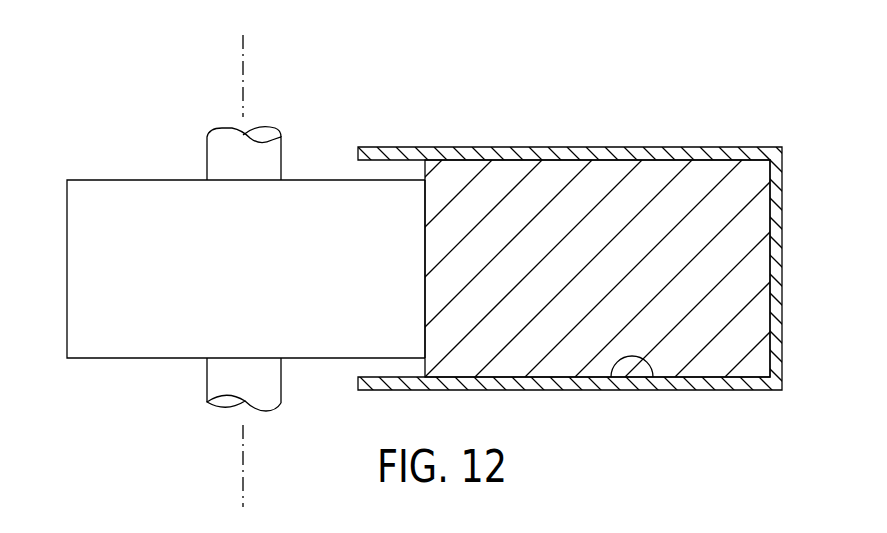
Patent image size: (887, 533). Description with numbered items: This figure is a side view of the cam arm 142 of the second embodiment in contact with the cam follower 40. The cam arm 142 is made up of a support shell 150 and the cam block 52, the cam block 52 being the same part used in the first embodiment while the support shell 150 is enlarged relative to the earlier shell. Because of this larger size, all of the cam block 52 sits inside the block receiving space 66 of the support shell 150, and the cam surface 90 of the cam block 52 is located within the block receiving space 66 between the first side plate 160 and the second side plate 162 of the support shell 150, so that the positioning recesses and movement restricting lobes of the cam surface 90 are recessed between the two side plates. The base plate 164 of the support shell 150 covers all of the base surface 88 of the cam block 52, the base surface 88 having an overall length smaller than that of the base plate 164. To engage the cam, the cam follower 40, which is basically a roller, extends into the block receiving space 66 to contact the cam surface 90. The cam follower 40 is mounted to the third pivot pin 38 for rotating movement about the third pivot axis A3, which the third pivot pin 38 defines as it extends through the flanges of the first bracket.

The third pivot axis A3 is at (243, 47).
The third pivot pin 38 is at (265, 164).
The cam follower 40 is at (113, 230).
The cam block 52 is at (714, 305).
The block receiving space 66 is at (654, 378).
The base surface 88 is at (783, 205).
The cam surface 90 is at (425, 250).
The cam arm 142 is at (739, 105).
The support shell 150 is at (659, 156).
The first side plate 160 is at (384, 155).
The second side plate 162 is at (383, 391).
The base plate 164 is at (783, 253).